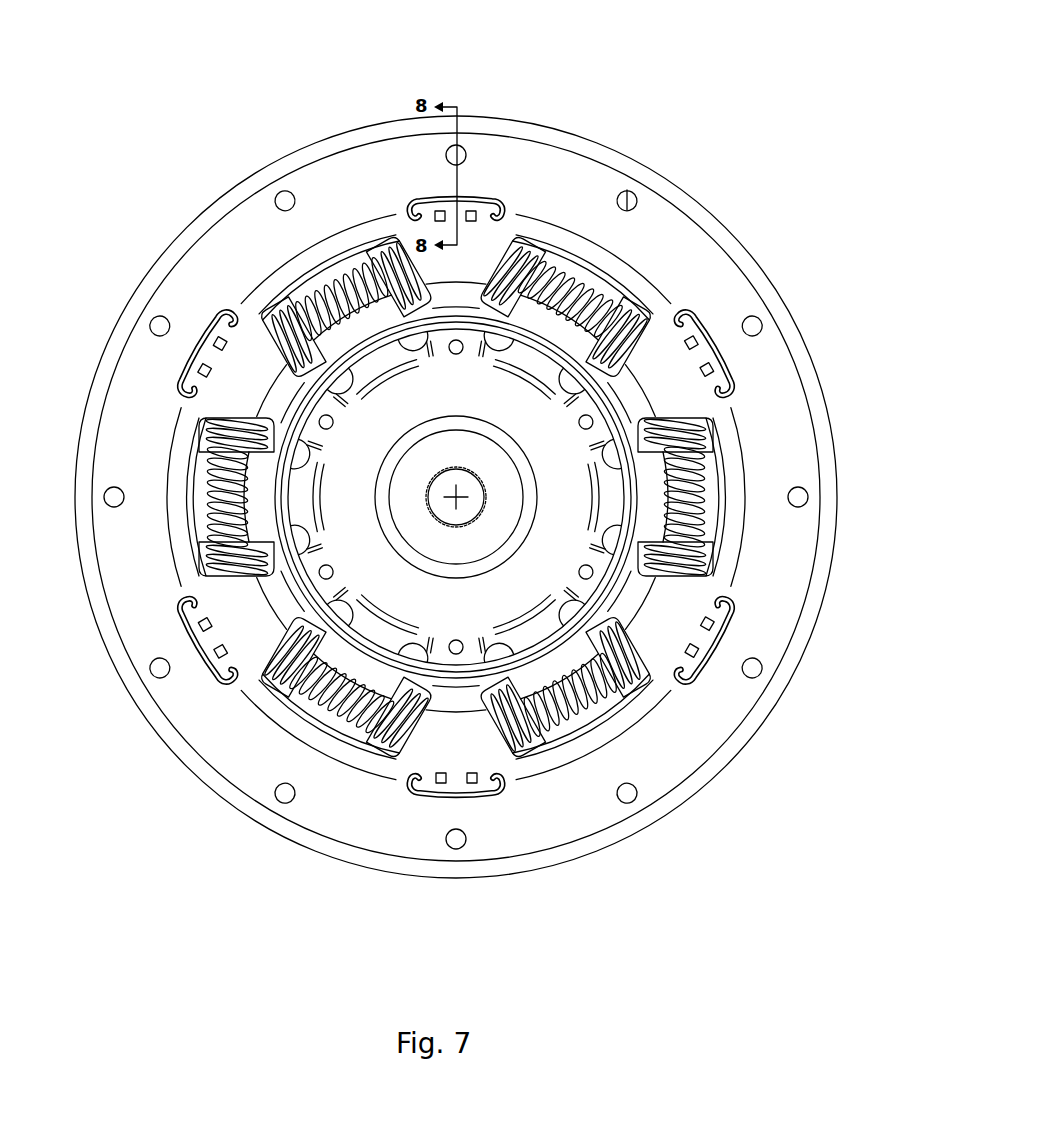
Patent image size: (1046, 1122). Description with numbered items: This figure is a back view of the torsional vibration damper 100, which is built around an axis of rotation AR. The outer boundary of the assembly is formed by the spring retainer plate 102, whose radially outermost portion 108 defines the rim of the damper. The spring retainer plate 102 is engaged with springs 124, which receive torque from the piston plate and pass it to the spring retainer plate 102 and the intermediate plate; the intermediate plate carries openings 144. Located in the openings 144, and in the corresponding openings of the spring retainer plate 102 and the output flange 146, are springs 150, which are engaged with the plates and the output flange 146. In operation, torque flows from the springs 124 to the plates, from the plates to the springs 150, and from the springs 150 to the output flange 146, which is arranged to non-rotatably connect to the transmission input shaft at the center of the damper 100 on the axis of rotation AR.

The torsional vibration damper 100 is at (732, 70).
The spring retainer plate 102 is at (456, 497).
The radially outermost portion 108 is at (456, 497).
The springs 124 is at (460, 497).
The openings 144 is at (456, 497).
The output flange 146 is at (456, 497).
The springs 150 is at (456, 455).
The axis of rotation AR is at (506, 488).